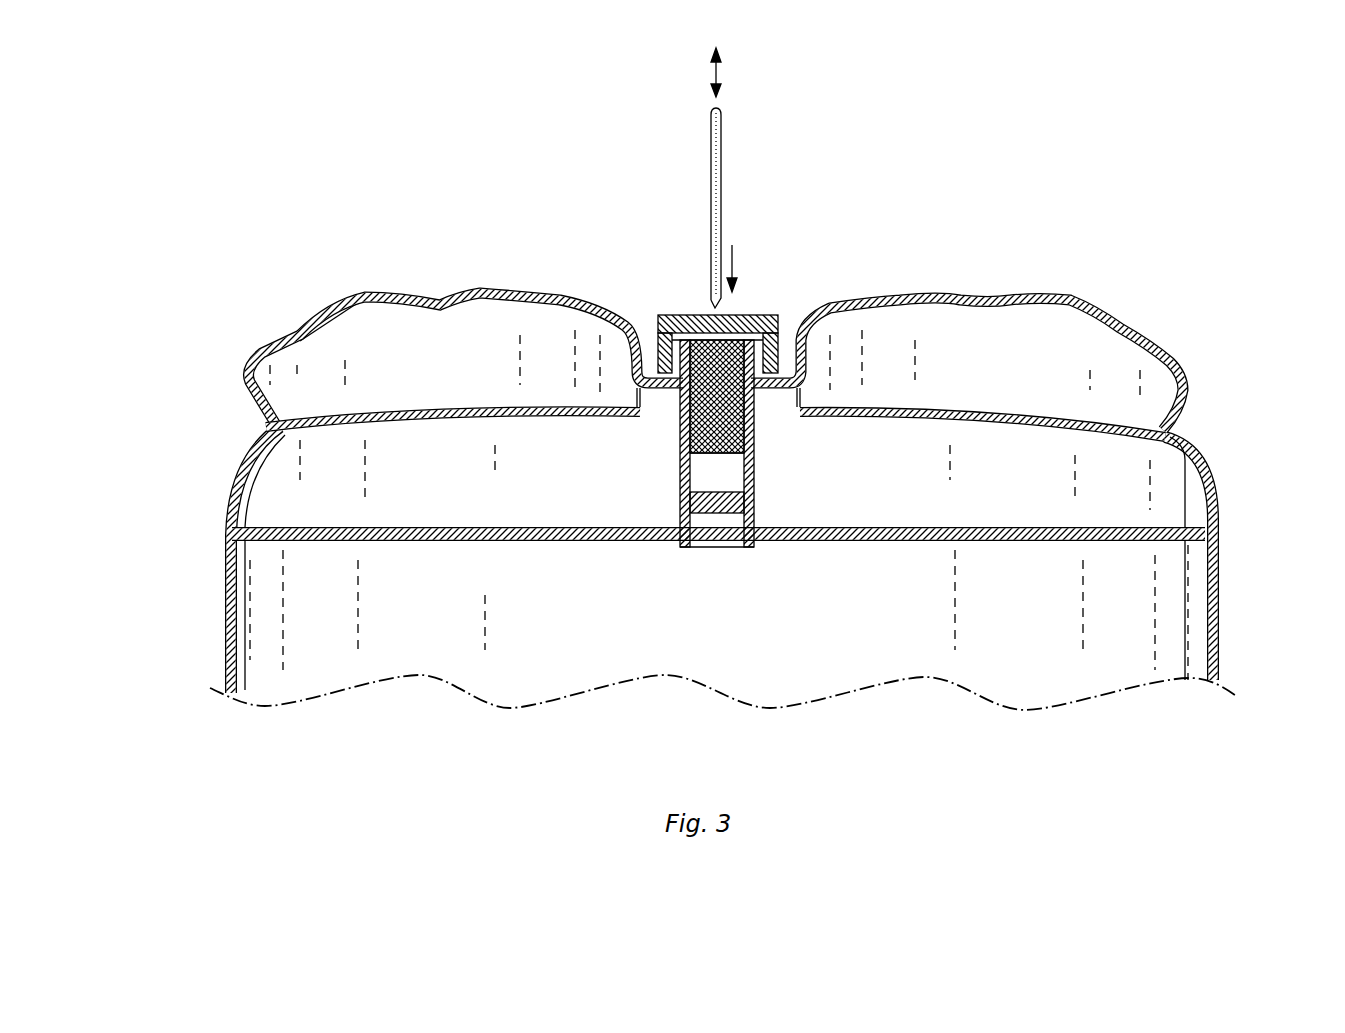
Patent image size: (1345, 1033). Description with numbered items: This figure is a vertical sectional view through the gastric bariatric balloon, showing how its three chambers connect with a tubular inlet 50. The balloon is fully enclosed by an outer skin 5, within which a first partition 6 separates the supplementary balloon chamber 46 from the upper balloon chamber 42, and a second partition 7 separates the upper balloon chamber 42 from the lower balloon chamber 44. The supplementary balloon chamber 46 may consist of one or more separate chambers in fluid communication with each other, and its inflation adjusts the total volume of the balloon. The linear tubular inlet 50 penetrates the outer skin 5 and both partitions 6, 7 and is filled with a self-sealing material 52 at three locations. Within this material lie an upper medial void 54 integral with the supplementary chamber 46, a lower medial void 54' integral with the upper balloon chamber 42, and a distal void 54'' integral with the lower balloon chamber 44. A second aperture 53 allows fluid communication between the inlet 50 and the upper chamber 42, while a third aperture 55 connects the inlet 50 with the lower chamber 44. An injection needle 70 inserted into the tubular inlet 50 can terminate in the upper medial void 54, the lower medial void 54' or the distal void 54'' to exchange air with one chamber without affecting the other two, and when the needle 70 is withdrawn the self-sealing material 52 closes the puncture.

The outer skin 5 is at (192, 645).
The first partition 6 is at (976, 406).
The second partition 7 is at (960, 526).
The upper balloon chamber 42 is at (1137, 463).
The lower balloon chamber 44 is at (1138, 608).
The supplementary balloon chamber 46 is at (476, 342).
The tubular inlet 50 is at (747, 534).
The self-sealing material 52 is at (706, 516).
The second aperture 53 is at (680, 468).
The upper medial void 54 is at (696, 384).
The lower medial void 54' is at (762, 474).
The distal void 54'' is at (737, 559).
The third aperture 55 is at (727, 551).
The injection needle 70 is at (712, 224).